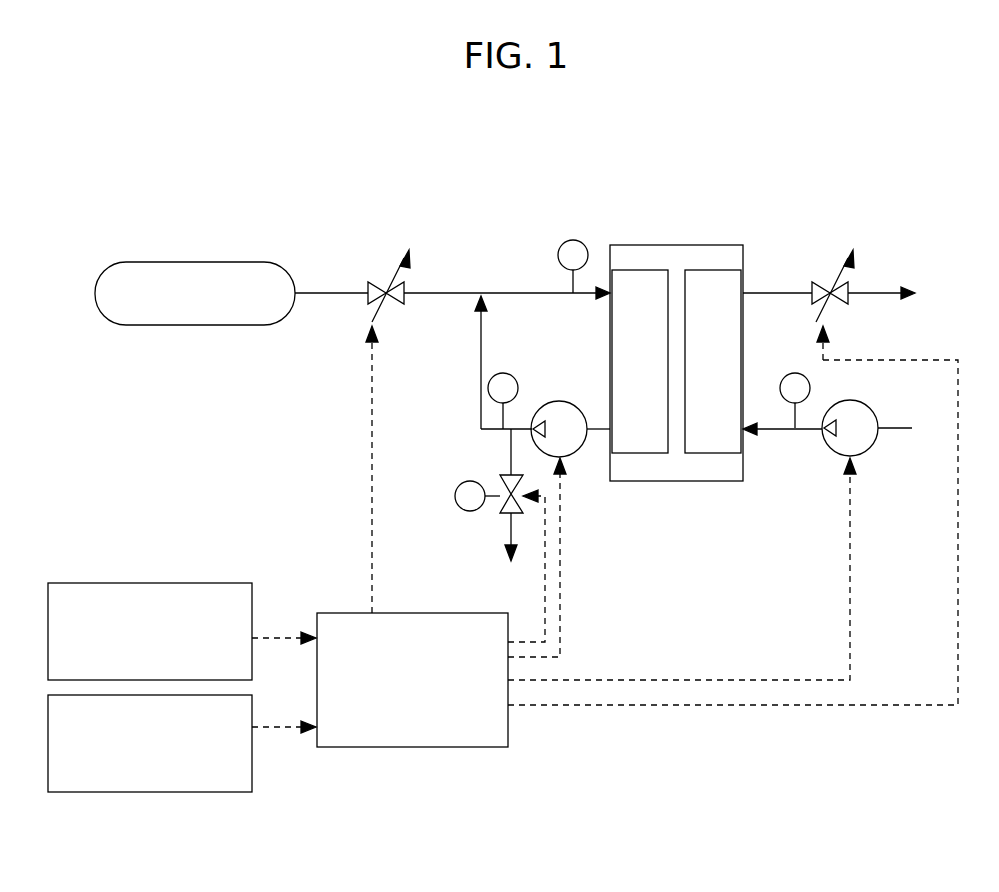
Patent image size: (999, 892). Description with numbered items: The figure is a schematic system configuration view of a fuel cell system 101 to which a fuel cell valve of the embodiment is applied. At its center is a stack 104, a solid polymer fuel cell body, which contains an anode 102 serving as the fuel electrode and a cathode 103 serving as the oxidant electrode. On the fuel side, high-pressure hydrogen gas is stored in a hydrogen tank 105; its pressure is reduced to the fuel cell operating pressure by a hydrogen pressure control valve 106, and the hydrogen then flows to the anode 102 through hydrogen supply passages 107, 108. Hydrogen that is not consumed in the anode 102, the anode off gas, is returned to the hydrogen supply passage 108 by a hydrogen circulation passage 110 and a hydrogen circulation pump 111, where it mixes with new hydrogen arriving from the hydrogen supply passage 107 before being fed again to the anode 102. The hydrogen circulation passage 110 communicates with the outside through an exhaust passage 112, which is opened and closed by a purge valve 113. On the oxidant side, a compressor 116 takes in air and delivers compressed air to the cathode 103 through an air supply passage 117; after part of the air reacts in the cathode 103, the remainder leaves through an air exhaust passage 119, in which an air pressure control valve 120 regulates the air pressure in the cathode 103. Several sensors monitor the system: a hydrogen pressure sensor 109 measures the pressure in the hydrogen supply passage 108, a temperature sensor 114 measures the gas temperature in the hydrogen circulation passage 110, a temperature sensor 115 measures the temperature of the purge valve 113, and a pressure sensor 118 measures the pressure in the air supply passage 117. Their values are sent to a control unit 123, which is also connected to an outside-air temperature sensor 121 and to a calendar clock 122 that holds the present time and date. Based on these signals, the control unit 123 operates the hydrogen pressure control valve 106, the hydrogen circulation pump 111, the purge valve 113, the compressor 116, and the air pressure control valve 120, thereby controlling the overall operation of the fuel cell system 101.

The fuel cell system 101 is at (905, 146).
The anode 102 is at (610, 330).
The cathode 103 is at (743, 330).
The stack 104 is at (669, 323).
The hydrogen tank 105 is at (248, 262).
The hydrogen pressure control valve 106 is at (378, 282).
The hydrogen supply passage 107 is at (445, 293).
The hydrogen supply passage 108 is at (528, 293).
The hydrogen pressure sensor 109 is at (573, 240).
The hydrogen circulation passage 110 is at (481, 362).
The hydrogen circulation pump 111 is at (577, 454).
The exhaust passage 112 is at (508, 531).
The purge valve 113 is at (500, 475).
The temperature sensor 114 is at (518, 386).
The temperature sensor 115 is at (455, 496).
The compressor 116 is at (872, 412).
The air supply passage 117 is at (780, 430).
The pressure sensor 118 is at (810, 388).
The air exhaust passage 119 is at (760, 293).
The air pressure control valve 120 is at (828, 280).
The outside-air temperature sensor 121 is at (222, 583).
The calendar clock 122 is at (242, 792).
The control unit 123 is at (480, 748).